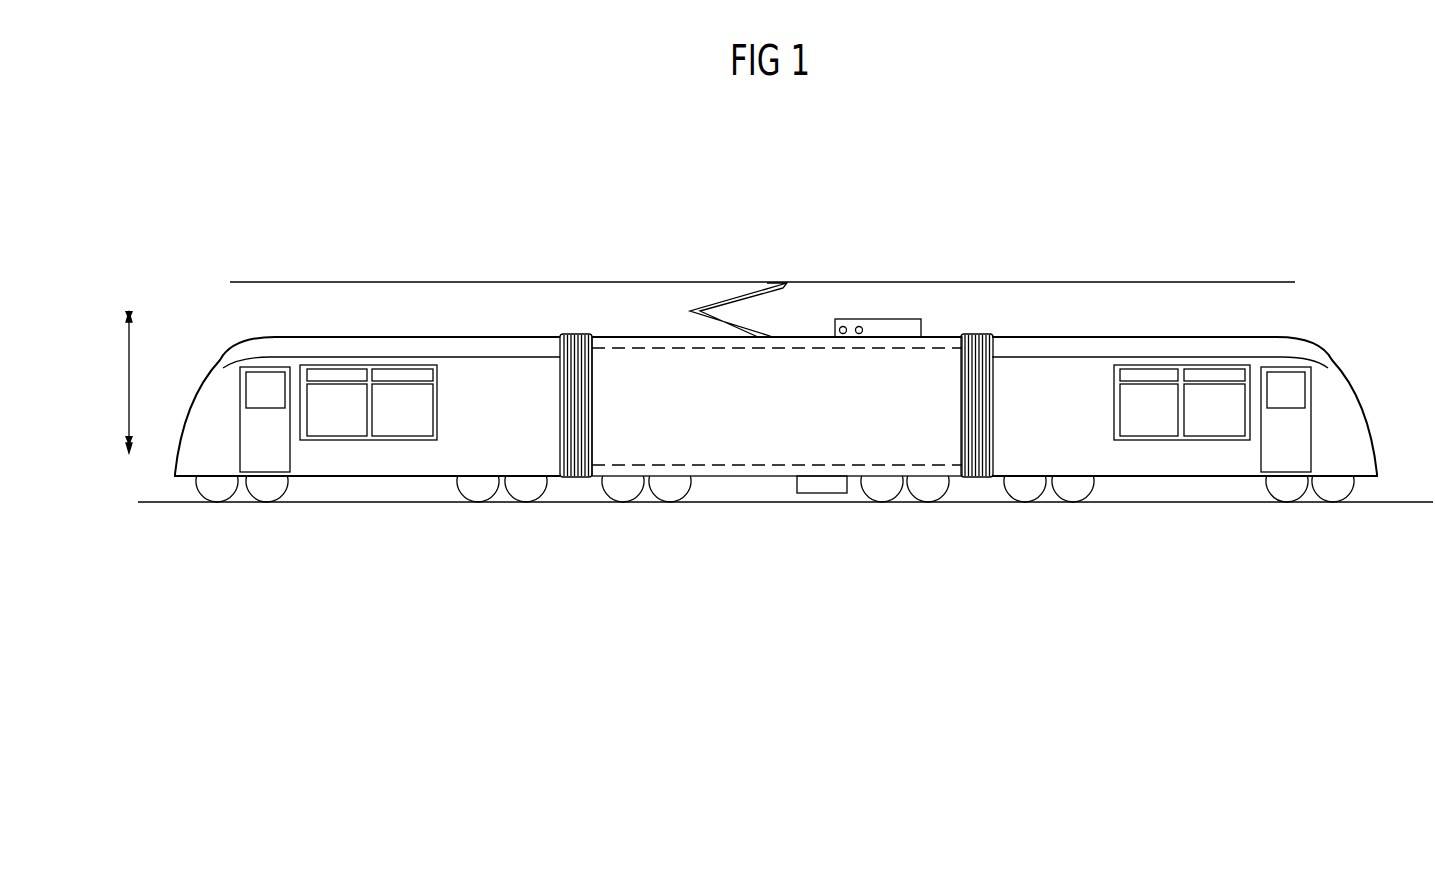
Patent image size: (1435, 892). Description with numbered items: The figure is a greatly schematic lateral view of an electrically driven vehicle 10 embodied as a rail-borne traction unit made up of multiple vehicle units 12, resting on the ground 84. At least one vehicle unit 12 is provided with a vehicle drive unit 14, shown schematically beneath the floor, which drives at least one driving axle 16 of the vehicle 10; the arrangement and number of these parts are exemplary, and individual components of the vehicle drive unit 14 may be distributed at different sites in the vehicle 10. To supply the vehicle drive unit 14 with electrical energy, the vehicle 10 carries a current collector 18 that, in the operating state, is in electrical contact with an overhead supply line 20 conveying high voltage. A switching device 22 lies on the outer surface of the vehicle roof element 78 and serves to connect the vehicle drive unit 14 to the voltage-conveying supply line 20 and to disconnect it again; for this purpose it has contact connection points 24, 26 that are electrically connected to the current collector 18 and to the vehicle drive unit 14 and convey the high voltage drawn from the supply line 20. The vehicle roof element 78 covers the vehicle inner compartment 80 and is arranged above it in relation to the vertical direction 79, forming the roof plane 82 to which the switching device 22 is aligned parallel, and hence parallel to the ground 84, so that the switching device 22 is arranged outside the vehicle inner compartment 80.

The vehicle 10 is at (1218, 240).
The vehicle unit 12 is at (724, 447).
The vehicle drive unit 14 is at (820, 484).
The driving axle 16 is at (882, 490).
The current collector 18 is at (722, 298).
The supply line 20 is at (1082, 282).
The switching device 22 is at (890, 318).
The contact connection point 24 is at (843, 326).
The contact connection point 26 is at (859, 326).
The vehicle roof element 78 is at (942, 341).
The vertical direction 79 is at (130, 352).
The vehicle inner compartment 80 is at (630, 376).
The roof plane 82 is at (815, 327).
The ground 84 is at (1411, 500).